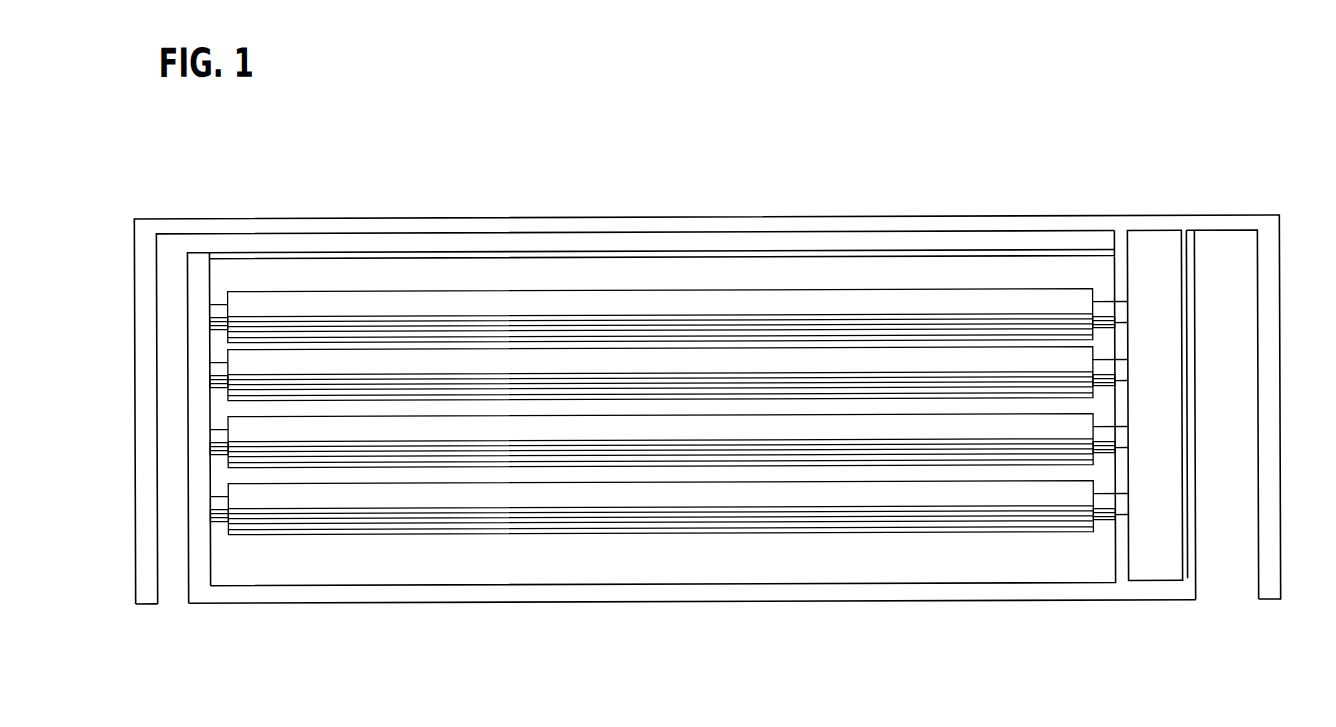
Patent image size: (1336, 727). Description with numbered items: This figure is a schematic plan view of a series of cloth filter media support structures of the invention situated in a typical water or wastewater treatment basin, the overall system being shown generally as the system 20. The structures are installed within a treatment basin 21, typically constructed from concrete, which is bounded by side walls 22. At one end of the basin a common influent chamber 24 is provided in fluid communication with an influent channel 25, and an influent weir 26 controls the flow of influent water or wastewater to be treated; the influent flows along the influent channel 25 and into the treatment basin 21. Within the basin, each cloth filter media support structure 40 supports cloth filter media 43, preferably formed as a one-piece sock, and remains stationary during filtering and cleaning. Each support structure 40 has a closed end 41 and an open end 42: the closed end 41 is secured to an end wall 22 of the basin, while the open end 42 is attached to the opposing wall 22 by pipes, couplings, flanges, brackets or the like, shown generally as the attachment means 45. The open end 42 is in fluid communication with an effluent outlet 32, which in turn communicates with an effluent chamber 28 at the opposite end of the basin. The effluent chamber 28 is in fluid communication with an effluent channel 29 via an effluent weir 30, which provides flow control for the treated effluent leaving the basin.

The system and devices 20 is at (876, 614).
The treatment basin 21 is at (907, 272).
The side walls 22 is at (385, 227).
The common influent chamber 24 is at (172, 300).
The influent channel 25 is at (303, 248).
The influent weir 26 is at (198, 250).
The effluent chamber 28 is at (1168, 568).
The effluent channel 29 is at (1235, 568).
The effluent weir 30 is at (1192, 461).
The effluent outlet 32 is at (1128, 316).
The cloth filter media support structure 40 is at (830, 528).
The closed end 41 is at (208, 532).
The open end 42 is at (1098, 446).
The cloth filter media 43 is at (708, 303).
The attachment means 45 is at (1104, 529).